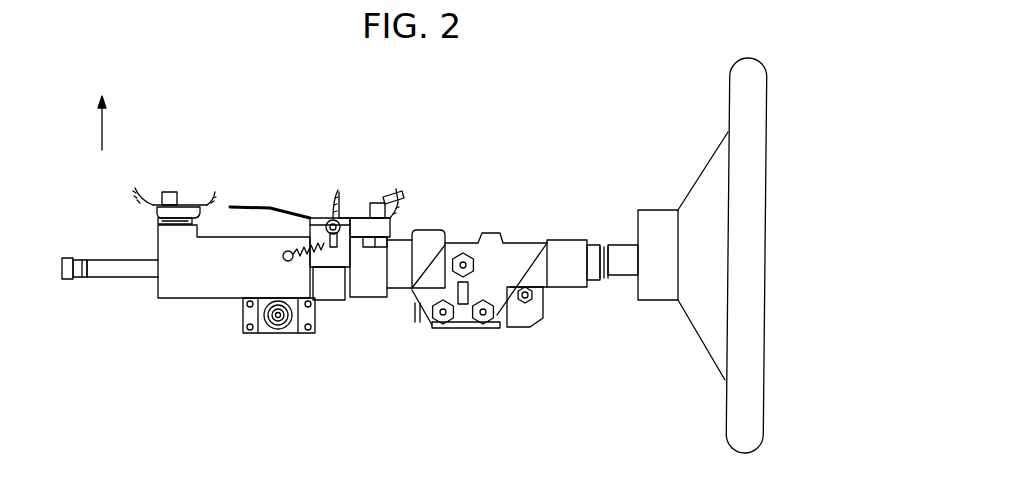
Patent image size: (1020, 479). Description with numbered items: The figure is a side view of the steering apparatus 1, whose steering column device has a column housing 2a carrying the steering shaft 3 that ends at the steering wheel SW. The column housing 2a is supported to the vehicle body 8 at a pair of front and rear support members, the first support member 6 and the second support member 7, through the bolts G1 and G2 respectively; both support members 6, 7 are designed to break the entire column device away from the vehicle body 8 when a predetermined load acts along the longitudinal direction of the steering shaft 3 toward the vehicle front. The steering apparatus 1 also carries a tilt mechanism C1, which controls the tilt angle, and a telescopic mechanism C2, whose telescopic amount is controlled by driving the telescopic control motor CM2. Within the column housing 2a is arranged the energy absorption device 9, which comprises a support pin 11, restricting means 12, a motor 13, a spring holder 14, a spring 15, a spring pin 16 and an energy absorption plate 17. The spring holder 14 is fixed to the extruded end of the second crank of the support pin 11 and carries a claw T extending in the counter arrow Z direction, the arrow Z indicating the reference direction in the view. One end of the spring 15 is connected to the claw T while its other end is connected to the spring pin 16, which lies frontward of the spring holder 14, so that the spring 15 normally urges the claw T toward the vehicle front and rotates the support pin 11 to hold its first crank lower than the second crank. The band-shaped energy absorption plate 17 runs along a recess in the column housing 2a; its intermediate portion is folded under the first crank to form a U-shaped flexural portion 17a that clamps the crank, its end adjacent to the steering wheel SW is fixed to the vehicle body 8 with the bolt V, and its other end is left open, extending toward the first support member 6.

The steering apparatus 1 is at (575, 156).
The column housing 2a is at (204, 290).
The steering shaft 3 is at (118, 279).
The first support member 6 is at (153, 210).
The second support member 7 is at (391, 227).
The vehicle body 8 is at (201, 195).
The energy absorption device 9 is at (283, 186).
The support pin 11 is at (339, 192).
The restricting means 12 is at (337, 267).
The motor 13 is at (333, 300).
The spring holder 14 is at (308, 225).
The spring 15 is at (310, 258).
The spring pin 16 is at (283, 257).
The energy absorption plate 17 is at (243, 207).
The U-shaped flexural portion 17a is at (330, 222).
The bolt G1 is at (170, 191).
The bolt G2 is at (377, 203).
The bolt V is at (404, 196).
The claw T is at (368, 267).
The arrow Z direction Z is at (102, 110).
The steering wheel SW is at (766, 108).
The telescopic control motor CM2 is at (281, 334).
The tilt mechanism C1 is at (478, 326).
The telescopic mechanism C2 is at (314, 334).